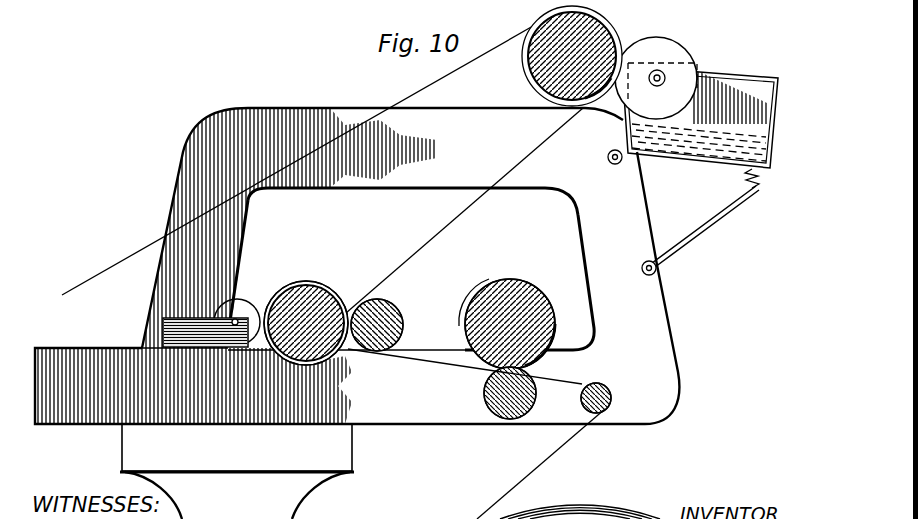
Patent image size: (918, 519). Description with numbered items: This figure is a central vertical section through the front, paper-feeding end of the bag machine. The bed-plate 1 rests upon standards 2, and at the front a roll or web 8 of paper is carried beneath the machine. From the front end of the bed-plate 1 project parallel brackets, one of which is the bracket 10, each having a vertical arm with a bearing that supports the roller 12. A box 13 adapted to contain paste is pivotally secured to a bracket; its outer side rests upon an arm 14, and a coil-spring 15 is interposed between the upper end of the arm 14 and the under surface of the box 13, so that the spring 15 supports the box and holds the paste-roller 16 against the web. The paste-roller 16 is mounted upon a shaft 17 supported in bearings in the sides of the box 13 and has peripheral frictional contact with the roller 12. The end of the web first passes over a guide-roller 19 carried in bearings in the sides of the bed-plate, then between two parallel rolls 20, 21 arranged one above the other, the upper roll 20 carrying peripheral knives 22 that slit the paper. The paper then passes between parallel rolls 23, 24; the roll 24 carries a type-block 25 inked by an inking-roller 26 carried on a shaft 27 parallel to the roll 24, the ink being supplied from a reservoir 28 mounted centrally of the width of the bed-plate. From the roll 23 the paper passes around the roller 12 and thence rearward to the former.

The bed-plate 1 is at (428, 428).
The standards 2 is at (340, 447).
The roll or web of paper 8 is at (598, 506).
The bracket 10 is at (630, 266).
The roller 12 is at (606, 20).
The box 13 is at (752, 72).
The arm 14 is at (727, 213).
The coil-spring 15 is at (745, 181).
The paste-roller 16 is at (658, 45).
The shaft 17 is at (668, 73).
The guide-roller 19 is at (592, 413).
The upper roll 20 is at (533, 288).
The lower roll 21 is at (510, 419).
The peripheral knives 22 is at (492, 283).
The roll 23 is at (387, 310).
The roll 24 is at (340, 293).
The type-block 25 is at (303, 283).
The inking-roller 26 is at (245, 300).
The shaft 27 is at (232, 321).
The reservoir 28 is at (163, 328).